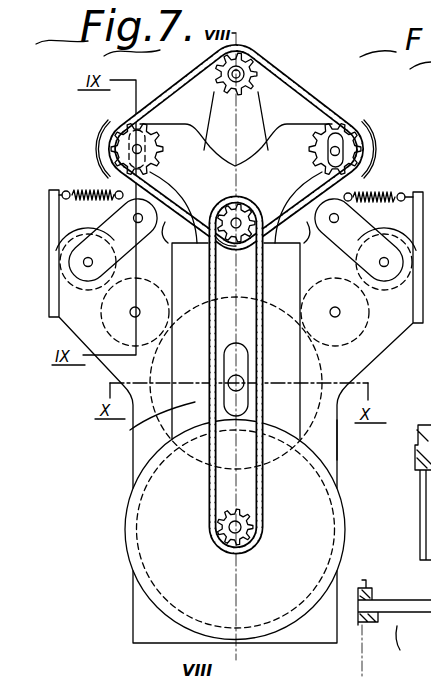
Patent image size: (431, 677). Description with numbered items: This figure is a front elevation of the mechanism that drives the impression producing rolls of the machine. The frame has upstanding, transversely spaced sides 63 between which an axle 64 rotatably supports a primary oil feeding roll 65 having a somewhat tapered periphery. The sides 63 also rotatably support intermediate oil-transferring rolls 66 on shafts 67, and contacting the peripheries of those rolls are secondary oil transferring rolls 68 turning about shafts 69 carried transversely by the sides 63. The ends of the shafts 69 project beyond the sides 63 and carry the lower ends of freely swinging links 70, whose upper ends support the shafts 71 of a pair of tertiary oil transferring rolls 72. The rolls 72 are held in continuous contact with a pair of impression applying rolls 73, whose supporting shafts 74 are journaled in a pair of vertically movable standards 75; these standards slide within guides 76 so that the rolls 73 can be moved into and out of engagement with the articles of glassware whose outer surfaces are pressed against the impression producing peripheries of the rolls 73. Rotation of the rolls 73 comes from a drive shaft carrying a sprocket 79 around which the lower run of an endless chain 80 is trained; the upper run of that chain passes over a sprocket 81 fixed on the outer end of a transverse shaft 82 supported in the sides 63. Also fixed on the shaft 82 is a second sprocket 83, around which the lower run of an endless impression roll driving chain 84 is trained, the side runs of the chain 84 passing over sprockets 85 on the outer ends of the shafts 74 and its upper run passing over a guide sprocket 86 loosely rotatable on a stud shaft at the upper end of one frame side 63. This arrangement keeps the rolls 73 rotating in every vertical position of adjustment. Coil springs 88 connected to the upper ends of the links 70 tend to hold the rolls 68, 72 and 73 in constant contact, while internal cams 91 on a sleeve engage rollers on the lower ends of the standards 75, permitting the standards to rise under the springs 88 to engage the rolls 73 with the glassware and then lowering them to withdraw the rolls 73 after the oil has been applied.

The frame sides 63 is at (330, 449).
The axle 64 is at (248, 383).
The primary oil feeding roll 65 is at (318, 358).
The intermediate oil-transferring rolls 66 is at (388, 356).
The shafts 67 is at (131, 312).
The secondary oil transferring rolls 68 is at (72, 231).
The shafts 69 is at (86, 262).
The freely swinging links 70 is at (104, 222).
The shafts 71 is at (136, 221).
The tertiary oil transferring rolls 72 is at (369, 181).
The impression applying rolls 73 is at (113, 118).
The supporting shafts 74 is at (142, 149).
The vertically movable standards 75 is at (218, 157).
The guides 76 is at (142, 428).
The sprocket 79 is at (233, 513).
The endless chain 80 is at (210, 320).
The sprocket 81 is at (223, 247).
The transverse shaft 82 is at (239, 212).
The second sprocket 83 is at (407, 649).
The impression roll driving chain 84 is at (300, 97).
The sprockets 85 is at (122, 143).
The guide sprocket 86 is at (252, 68).
The coil springs 88 is at (96, 192).
The internal cams 91 is at (126, 500).